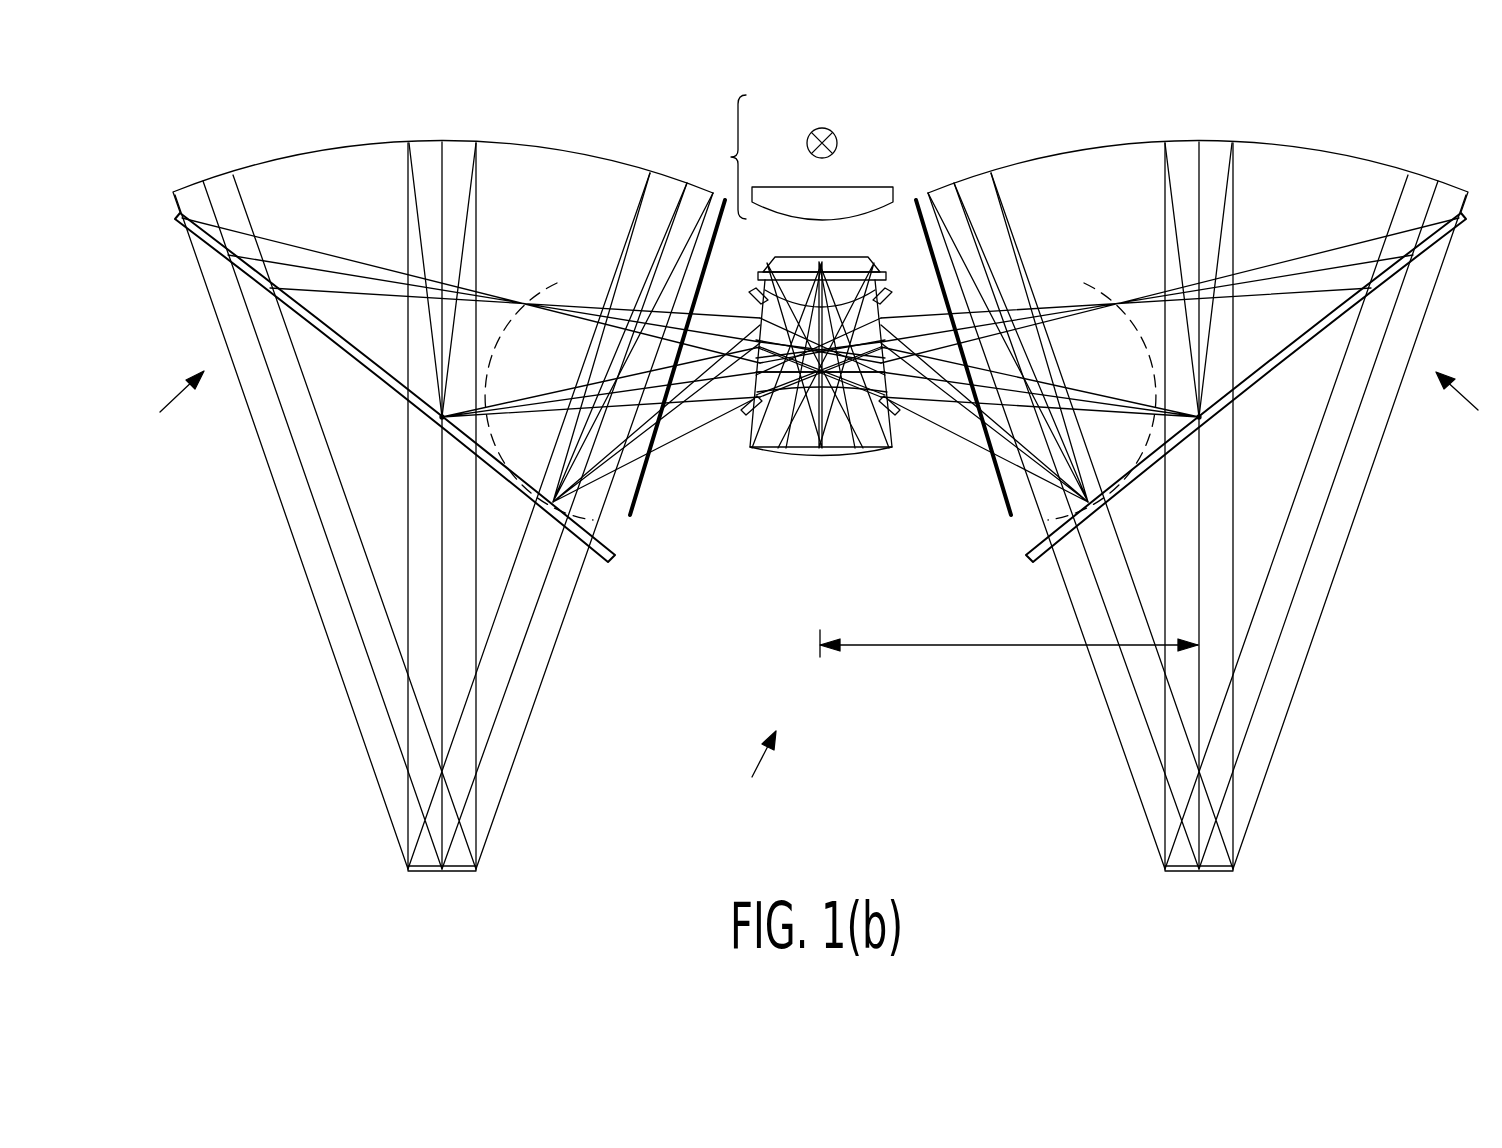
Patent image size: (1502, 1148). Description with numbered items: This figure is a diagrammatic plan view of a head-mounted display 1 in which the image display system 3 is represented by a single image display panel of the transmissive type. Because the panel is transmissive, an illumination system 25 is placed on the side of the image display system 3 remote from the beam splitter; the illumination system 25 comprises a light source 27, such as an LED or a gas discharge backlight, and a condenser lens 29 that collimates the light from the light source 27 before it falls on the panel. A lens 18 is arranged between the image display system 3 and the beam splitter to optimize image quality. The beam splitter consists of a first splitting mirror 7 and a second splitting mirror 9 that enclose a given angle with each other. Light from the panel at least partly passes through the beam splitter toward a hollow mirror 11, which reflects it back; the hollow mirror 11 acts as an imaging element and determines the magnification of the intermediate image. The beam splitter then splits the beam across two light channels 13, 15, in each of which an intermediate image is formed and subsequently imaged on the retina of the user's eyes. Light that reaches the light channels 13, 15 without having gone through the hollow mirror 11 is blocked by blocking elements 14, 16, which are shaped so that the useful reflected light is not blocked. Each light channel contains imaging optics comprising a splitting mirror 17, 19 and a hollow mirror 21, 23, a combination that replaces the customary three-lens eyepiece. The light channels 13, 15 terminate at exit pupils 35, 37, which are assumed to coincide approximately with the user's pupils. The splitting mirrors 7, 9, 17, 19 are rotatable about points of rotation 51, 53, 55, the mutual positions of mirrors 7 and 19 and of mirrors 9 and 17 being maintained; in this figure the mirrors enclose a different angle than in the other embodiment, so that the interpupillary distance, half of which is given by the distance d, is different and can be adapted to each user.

The head-mounted display 1 is at (740, 812).
The image display system 3 is at (838, 273).
The first splitting mirror 7 is at (749, 295).
The second splitting mirror 9 is at (893, 295).
The hollow mirror 11 is at (768, 452).
The light channel 13 is at (1464, 448).
The blocking element 14 is at (1005, 500).
The light channel 15 is at (150, 448).
The blocking element 16 is at (648, 505).
The splitting mirror 17 is at (1033, 568).
The lens 18 is at (803, 290).
The splitting mirror 19 is at (612, 568).
The hollow mirror 21 is at (1022, 158).
The hollow mirror 23 is at (264, 158).
The illumination system 25 is at (733, 157).
The light source 27 is at (838, 143).
The condenser lens 29 is at (840, 187).
The exit pupil 35 is at (1178, 873).
The exit pupil 37 is at (414, 873).
The point of rotation 51 is at (1203, 418).
The point of rotation 53 is at (440, 418).
The point of rotation 55 is at (838, 452).
The distance d is at (1009, 651).